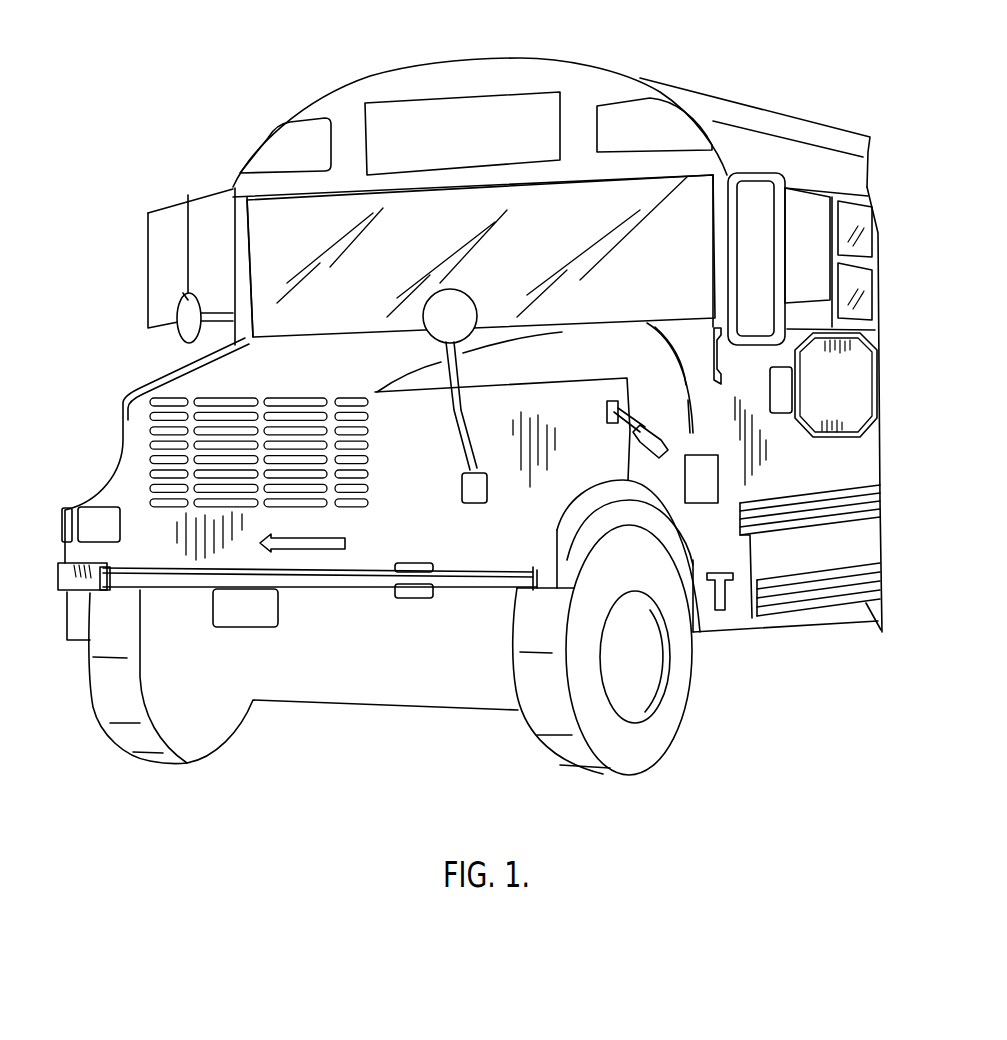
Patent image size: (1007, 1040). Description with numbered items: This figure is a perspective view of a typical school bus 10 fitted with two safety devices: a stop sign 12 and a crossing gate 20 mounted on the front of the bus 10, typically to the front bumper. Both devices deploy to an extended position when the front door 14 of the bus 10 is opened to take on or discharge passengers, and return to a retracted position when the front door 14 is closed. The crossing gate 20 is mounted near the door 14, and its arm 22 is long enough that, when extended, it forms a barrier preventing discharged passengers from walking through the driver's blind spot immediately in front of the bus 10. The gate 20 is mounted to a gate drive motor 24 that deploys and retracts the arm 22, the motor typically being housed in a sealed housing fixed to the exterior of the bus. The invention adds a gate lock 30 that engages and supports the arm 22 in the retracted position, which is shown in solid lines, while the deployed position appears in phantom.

The school bus 10 is at (711, 72).
The stop sign 12 is at (843, 433).
The front door 14 is at (242, 332).
The crossing gate 20 is at (138, 545).
The arm 22 is at (363, 582).
The gate drive motor 24 is at (66, 578).
The gate lock 30 is at (418, 548).